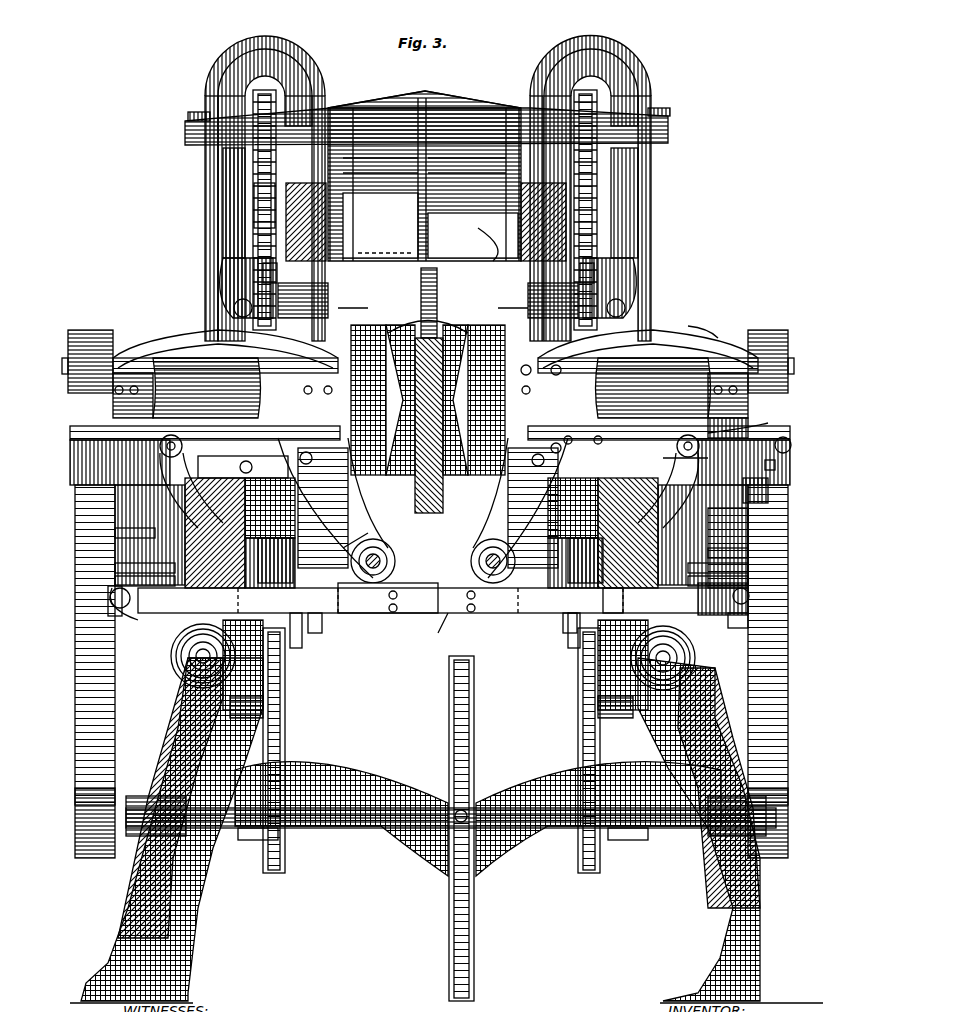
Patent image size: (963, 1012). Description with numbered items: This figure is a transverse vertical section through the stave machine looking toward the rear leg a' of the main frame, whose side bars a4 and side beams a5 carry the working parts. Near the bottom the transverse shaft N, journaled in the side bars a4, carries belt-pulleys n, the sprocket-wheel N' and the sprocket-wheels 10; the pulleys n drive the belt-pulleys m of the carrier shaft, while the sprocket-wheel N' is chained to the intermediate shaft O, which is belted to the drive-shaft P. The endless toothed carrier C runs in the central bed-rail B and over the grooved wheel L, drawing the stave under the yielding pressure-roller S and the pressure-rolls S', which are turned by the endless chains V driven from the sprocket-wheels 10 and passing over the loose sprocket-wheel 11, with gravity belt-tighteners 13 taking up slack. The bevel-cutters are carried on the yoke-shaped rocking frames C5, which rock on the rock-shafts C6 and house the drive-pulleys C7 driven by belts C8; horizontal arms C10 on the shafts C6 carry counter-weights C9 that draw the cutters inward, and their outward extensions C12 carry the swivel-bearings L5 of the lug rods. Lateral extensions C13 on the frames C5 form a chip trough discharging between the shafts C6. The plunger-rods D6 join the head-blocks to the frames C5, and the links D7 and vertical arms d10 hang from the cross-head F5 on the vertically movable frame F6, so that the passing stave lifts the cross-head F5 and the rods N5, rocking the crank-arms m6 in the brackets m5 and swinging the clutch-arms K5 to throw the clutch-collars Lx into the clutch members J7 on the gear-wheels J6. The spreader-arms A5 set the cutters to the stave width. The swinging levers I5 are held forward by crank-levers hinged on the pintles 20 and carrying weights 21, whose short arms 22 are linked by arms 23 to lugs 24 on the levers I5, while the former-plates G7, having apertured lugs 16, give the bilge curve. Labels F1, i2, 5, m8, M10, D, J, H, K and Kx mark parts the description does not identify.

The rear leg a' is at (438, 188).
The endless sprocket-chains V is at (250, 88).
The cross-head F5 is at (215, 110).
The housing F1 is at (424, 176).
The rods N5 is at (385, 245).
The vertically-movable frame F6 is at (475, 244).
The side beams a5 is at (352, 252).
The chain guide i2 is at (248, 196).
The vertical arms d10 is at (215, 237).
The yielding pressure-roller S is at (428, 250).
The yielding pressure-rolls S' is at (427, 288).
The horizontal arms C10 is at (628, 270).
The counter-weights C9 is at (434, 494).
The central longitudinal bed-rail B is at (428, 400).
The endless-chain carrier C is at (428, 458).
The fastener 5 is at (418, 433).
The rocking frames C5 is at (435, 427).
The belts C8 is at (680, 330).
The links D7 is at (75, 338).
The drive-pulleys C7 is at (430, 388).
The crank-arms m6 is at (431, 416).
The spreader-arms A5 is at (542, 369).
The pin m8 is at (555, 385).
The lever M10 is at (760, 405).
The rail D is at (414, 435).
The plunger-rods D6 is at (224, 481).
The pintles 20 is at (668, 481).
The short arm 22 is at (678, 463).
The weight 21 is at (782, 437).
The lugs 24 is at (770, 460).
The arm 23 is at (760, 485).
The swinging levers I5 is at (80, 480).
The drive-shaft P is at (431, 533).
The sprocket-wheel 11 is at (431, 474).
The grooved wheel L is at (423, 508).
The clutch-collars Lx is at (440, 587).
The lateral extensions C13 is at (429, 539).
The intermediate shaft O is at (430, 560).
The rock-shafts C6 is at (424, 595).
The former-plates G7 is at (100, 592).
The apertured lugs 16 is at (112, 608).
The block J is at (745, 528).
The brackets m5 is at (745, 545).
The belt-pulleys m is at (120, 525).
The plate H is at (110, 560).
The plate K is at (110, 572).
The swinging clutch-arms K5 is at (745, 572).
The plate Kx is at (458, 626).
The outward extensions C12 is at (625, 600).
The clutch members J7 is at (310, 622).
The gear-wheels J6 is at (286, 640).
The swivel-bearings L5 is at (738, 623).
The gravity belt-tighteners 13 is at (278, 685).
The side bars a4 is at (140, 840).
The belt-pulleys n is at (70, 810).
The transverse shaft N is at (451, 819).
The sprocket-wheel N' is at (470, 828).
The sprocket-wheels 10 is at (275, 826).